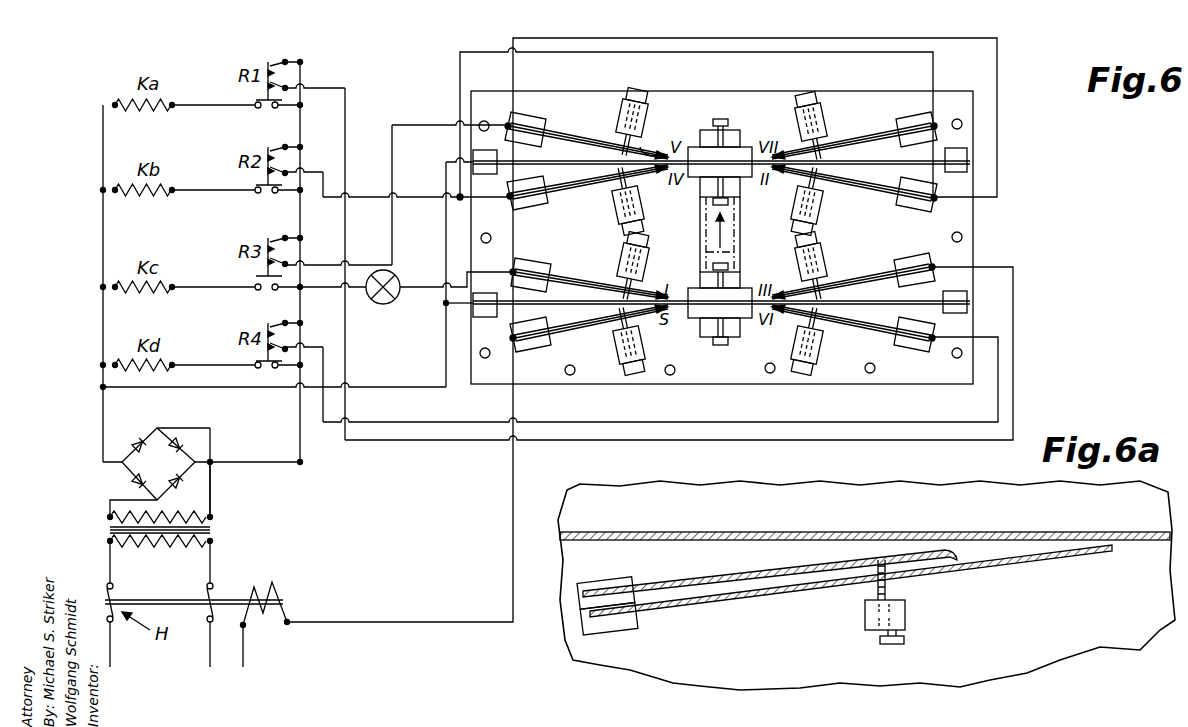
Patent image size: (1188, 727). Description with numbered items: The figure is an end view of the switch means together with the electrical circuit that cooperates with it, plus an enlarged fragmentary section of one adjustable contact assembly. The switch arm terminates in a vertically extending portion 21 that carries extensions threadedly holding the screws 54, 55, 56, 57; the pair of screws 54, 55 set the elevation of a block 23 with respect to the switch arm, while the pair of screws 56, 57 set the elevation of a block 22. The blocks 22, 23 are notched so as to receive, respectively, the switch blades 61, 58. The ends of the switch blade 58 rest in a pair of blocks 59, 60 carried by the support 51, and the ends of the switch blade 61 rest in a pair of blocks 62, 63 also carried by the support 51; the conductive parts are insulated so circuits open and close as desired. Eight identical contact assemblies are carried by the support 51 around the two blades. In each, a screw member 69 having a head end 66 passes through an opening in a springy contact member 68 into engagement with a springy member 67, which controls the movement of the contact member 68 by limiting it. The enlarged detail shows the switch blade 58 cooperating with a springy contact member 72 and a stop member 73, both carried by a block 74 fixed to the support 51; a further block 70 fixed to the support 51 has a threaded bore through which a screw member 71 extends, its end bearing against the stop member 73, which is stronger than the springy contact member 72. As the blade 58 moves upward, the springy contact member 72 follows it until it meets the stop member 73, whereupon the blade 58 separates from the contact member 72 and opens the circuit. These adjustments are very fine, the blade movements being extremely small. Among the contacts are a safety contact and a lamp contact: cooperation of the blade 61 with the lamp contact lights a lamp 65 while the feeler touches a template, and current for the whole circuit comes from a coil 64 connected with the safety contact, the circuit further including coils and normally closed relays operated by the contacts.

In FIG. 6, the vertically extending portion of the switch arm 21 is at (712, 242).
In FIG. 6, the block 22 is at (698, 316).
In FIG. 6, the block 23 is at (698, 178).
In FIG. 6, the support 51 is at (960, 221).
In FIG. 6A, the support 51 is at (866, 585).
In FIG. 6, the screw 54 is at (721, 118).
In FIG. 6, the screw 55 is at (730, 203).
In FIG. 6, the screw 56 is at (730, 266).
In FIG. 6, the screw 57 is at (723, 346).
In FIG. 6, the switch blade 58 is at (742, 150).
In FIG. 6A, the switch blade 58 is at (1016, 531).
In FIG. 6, the block 59 is at (960, 152).
In FIG. 6, the block 60 is at (472, 156).
In FIG. 6, the switch blade 61 is at (702, 292).
In FIG. 6, the block 62 is at (960, 297).
In FIG. 6, the block 63 is at (486, 318).
In FIG. 6, the coil 64 is at (272, 638).
In FIG. 6, the lamp 65 is at (383, 304).
In FIG. 6, the head end 66 is at (638, 98).
In FIG. 6, the springy member 67 is at (575, 138).
In FIG. 6, the springy contact member 68 is at (590, 142).
In FIG. 6, the screw member 69 is at (640, 146).
In FIG. 6A, the block 70 is at (906, 612).
In FIG. 6A, the screw member 71 is at (905, 642).
In FIG. 6A, the springy contact member 72 is at (762, 600).
In FIG. 6A, the stop member 73 is at (703, 577).
In FIG. 6A, the block 74 is at (582, 587).